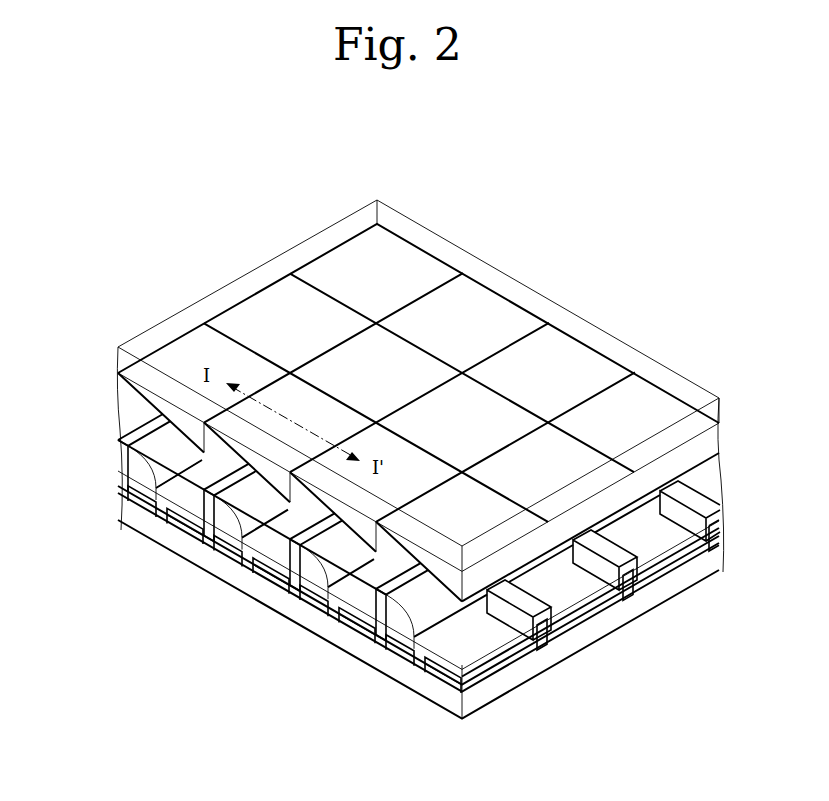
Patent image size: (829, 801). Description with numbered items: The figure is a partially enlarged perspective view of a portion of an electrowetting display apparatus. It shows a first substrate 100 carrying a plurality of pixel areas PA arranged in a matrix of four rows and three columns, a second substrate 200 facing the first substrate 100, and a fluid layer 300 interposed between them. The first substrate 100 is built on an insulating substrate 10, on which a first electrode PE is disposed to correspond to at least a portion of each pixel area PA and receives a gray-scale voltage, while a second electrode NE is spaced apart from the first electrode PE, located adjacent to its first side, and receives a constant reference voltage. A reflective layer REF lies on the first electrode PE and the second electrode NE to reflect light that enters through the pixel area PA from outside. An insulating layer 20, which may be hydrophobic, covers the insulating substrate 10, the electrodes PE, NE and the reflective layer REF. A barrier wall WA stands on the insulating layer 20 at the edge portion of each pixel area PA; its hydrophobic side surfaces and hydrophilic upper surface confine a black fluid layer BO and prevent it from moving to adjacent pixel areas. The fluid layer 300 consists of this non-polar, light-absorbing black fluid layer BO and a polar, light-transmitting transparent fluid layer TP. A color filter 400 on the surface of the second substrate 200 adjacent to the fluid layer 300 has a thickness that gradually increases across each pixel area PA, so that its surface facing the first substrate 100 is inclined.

The insulating substrate 10 is at (403, 676).
The insulating layer 20 is at (380, 645).
The first substrate 100 is at (403, 610).
The second substrate 200 is at (712, 410).
The fluid layer 300 is at (363, 531).
The color filter 400 is at (708, 443).
The transparent fluid layer TP is at (134, 428).
The black fluid layer BO is at (134, 462).
The pixel area PA is at (144, 521).
The reflective layer REF is at (243, 566).
The first electrode PE is at (266, 576).
The barrier wall WA is at (298, 583).
The second electrode NE is at (322, 612).